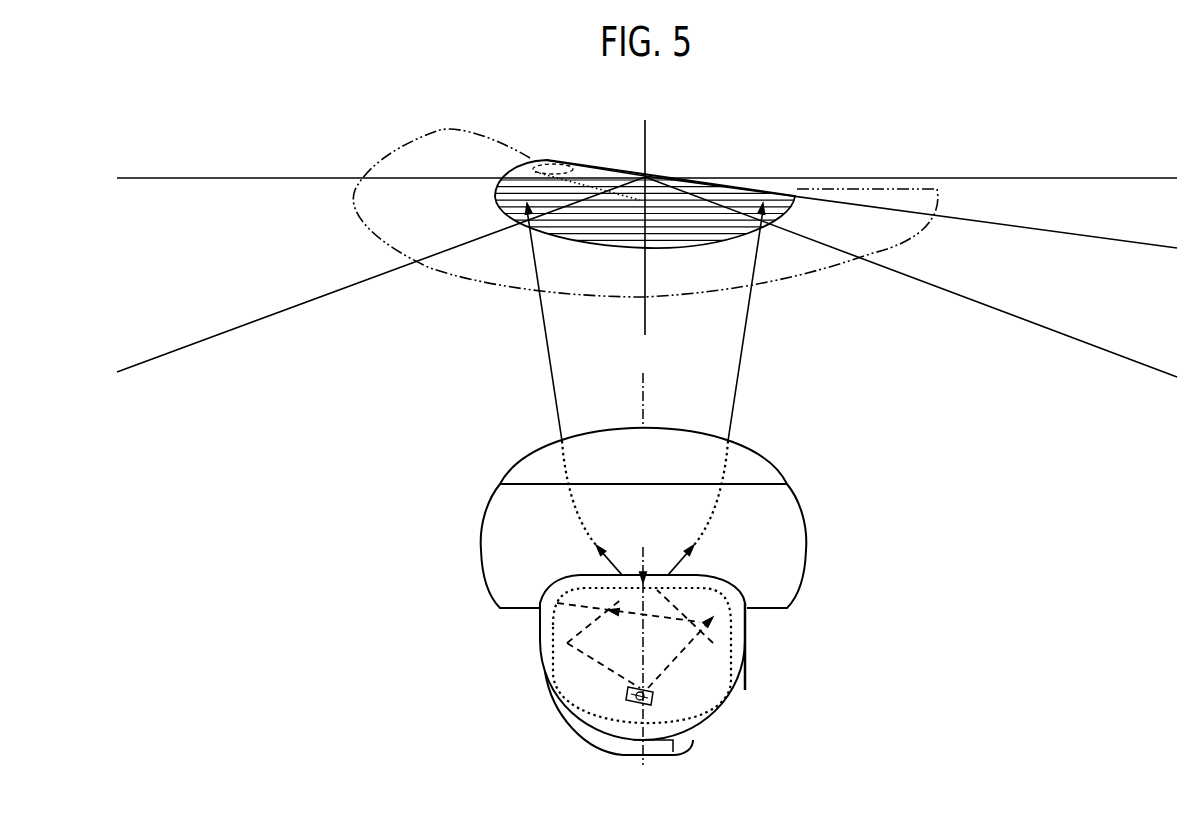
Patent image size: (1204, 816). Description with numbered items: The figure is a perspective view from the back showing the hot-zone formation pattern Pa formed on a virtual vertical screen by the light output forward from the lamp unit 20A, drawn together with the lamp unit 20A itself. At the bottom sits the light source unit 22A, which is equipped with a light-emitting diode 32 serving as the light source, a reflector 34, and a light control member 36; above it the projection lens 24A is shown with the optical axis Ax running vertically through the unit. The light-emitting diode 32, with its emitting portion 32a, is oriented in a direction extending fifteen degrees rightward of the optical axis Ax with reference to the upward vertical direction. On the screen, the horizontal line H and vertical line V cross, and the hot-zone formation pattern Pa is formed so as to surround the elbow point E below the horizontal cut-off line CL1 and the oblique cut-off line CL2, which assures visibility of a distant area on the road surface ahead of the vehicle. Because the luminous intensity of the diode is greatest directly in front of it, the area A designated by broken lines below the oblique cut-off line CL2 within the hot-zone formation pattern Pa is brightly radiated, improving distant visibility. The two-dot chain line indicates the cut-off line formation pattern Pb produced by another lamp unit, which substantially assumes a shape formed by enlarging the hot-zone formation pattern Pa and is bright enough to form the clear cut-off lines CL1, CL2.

The lamp unit 20A is at (905, 597).
The light source unit 22A is at (528, 581).
The projection lens 24A is at (480, 462).
The light-emitting diode 32 is at (672, 684).
The light emitting element 32a is at (660, 697).
The reflector 34 is at (761, 633).
The light control member 36 is at (740, 592).
The horizontal line H is at (647, 179).
The vertical line V is at (646, 230).
The optical axis Ax is at (643, 398).
The elbow point E is at (650, 177).
The area A is at (515, 162).
The hot-zone formation pattern Pa is at (758, 172).
The cut-off line formation pattern Pb is at (906, 171).
The horizontal cut-off line CL1 is at (835, 187).
The oblique cut-off line CL2 is at (524, 154).